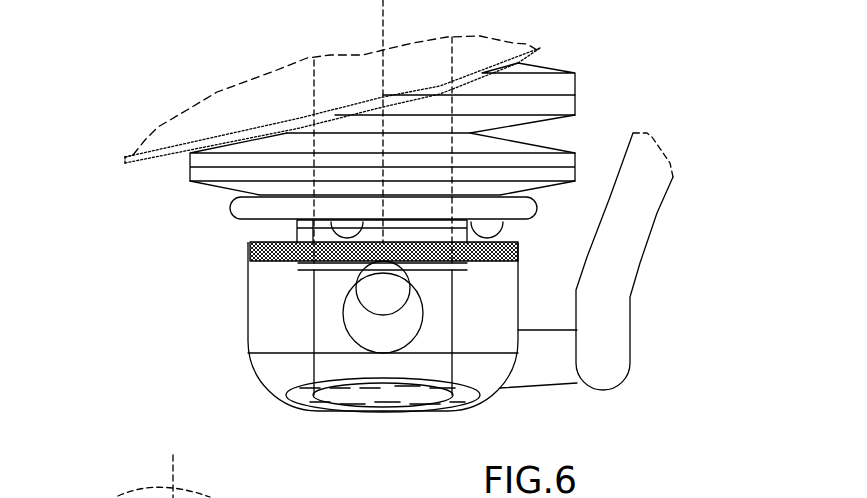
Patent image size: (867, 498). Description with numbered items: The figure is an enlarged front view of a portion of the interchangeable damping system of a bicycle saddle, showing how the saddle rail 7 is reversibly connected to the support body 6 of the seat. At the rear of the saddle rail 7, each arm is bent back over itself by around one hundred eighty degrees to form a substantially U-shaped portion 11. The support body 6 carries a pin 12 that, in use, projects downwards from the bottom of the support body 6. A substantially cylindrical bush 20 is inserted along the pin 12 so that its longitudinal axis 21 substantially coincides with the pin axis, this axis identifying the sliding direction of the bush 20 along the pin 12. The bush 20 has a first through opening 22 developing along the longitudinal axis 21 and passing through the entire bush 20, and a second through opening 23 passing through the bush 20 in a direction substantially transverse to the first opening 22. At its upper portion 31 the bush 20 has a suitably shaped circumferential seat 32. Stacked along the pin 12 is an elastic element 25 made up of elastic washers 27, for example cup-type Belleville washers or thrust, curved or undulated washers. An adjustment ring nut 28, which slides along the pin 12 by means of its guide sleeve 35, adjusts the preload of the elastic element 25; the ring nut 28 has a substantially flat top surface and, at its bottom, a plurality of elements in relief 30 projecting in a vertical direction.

The support body 6 is at (172, 138).
The saddle rail 7 is at (636, 311).
The U-shaped portion 11 is at (577, 387).
The pin 12 is at (378, 329).
The bush 20 is at (256, 395).
The longitudinal axis 21 is at (383, 35).
The first through opening 22 is at (443, 343).
The second through opening 23 is at (373, 325).
The elastic element 25 is at (442, 112).
The elastic washers 27 is at (577, 105).
The ring nut 28 is at (230, 207).
The elements in relief 30 is at (467, 273).
The upper portion 31 is at (170, 285).
The circumferential seat 32 is at (283, 259).
The guide sleeve 35 is at (307, 262).